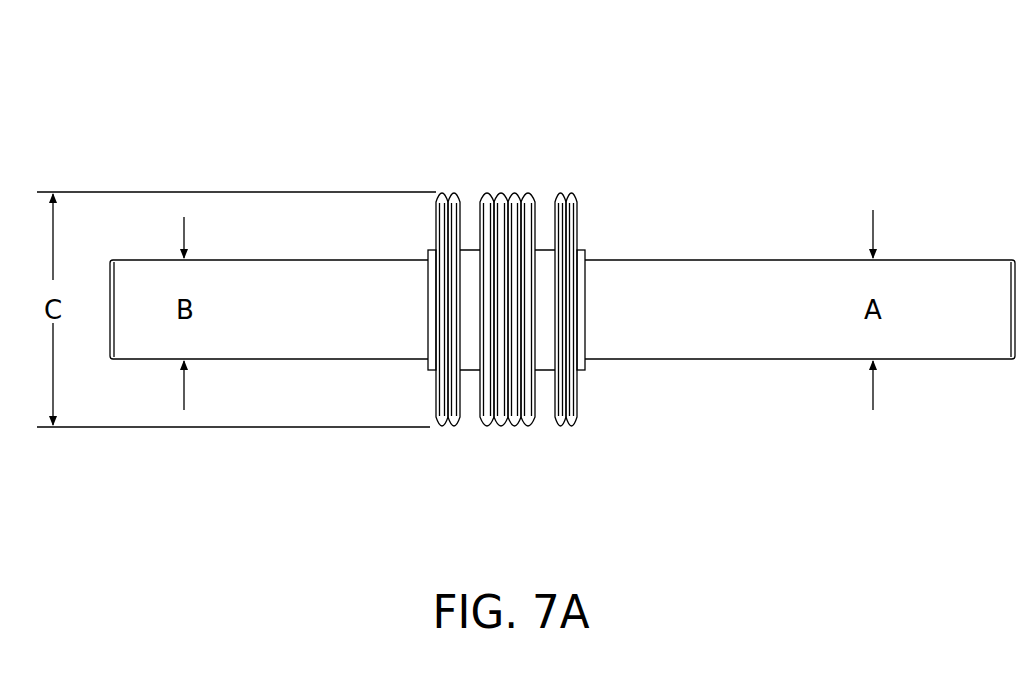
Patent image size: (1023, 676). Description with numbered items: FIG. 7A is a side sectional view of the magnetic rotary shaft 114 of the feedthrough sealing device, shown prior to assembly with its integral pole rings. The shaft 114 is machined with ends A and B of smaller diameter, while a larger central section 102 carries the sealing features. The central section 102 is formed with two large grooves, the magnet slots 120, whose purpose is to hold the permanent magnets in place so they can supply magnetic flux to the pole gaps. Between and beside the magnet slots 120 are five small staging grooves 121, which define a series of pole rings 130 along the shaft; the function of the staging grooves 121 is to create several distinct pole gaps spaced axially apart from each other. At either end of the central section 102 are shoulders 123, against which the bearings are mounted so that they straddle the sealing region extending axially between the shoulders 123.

The central section 102 is at (435, 137).
The magnetic rotary shaft 114 is at (764, 360).
The magnet slots 120 is at (472, 193).
The staging grooves 121 is at (493, 429).
The shoulders 123 is at (432, 250).
The pole rings 130 is at (439, 390).